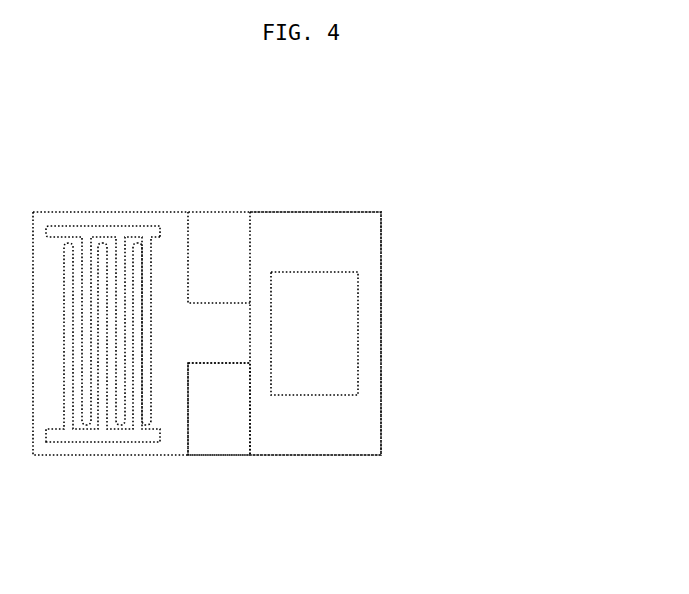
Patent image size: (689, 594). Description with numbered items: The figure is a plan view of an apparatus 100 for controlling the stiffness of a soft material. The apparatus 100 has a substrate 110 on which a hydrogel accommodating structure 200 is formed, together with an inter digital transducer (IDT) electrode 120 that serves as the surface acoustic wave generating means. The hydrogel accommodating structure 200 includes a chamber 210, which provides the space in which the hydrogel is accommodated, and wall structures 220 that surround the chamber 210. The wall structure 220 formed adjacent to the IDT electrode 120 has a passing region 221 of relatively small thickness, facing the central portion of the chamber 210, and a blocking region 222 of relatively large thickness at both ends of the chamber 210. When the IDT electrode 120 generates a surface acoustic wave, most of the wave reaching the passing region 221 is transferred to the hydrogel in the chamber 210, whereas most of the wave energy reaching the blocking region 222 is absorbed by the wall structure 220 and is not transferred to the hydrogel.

The apparatus of controlling a stiffness of a soft material 100 is at (234, 284).
The substrate 110 is at (120, 290).
The inter digital transducer (IDT) electrode 120 is at (103, 288).
The hydrogel accommodating structure 200 is at (428, 377).
The chamber 210 is at (374, 328).
The wall structure 220 is at (361, 377).
The passing region 221 is at (356, 339).
The blocking region 222 is at (308, 454).